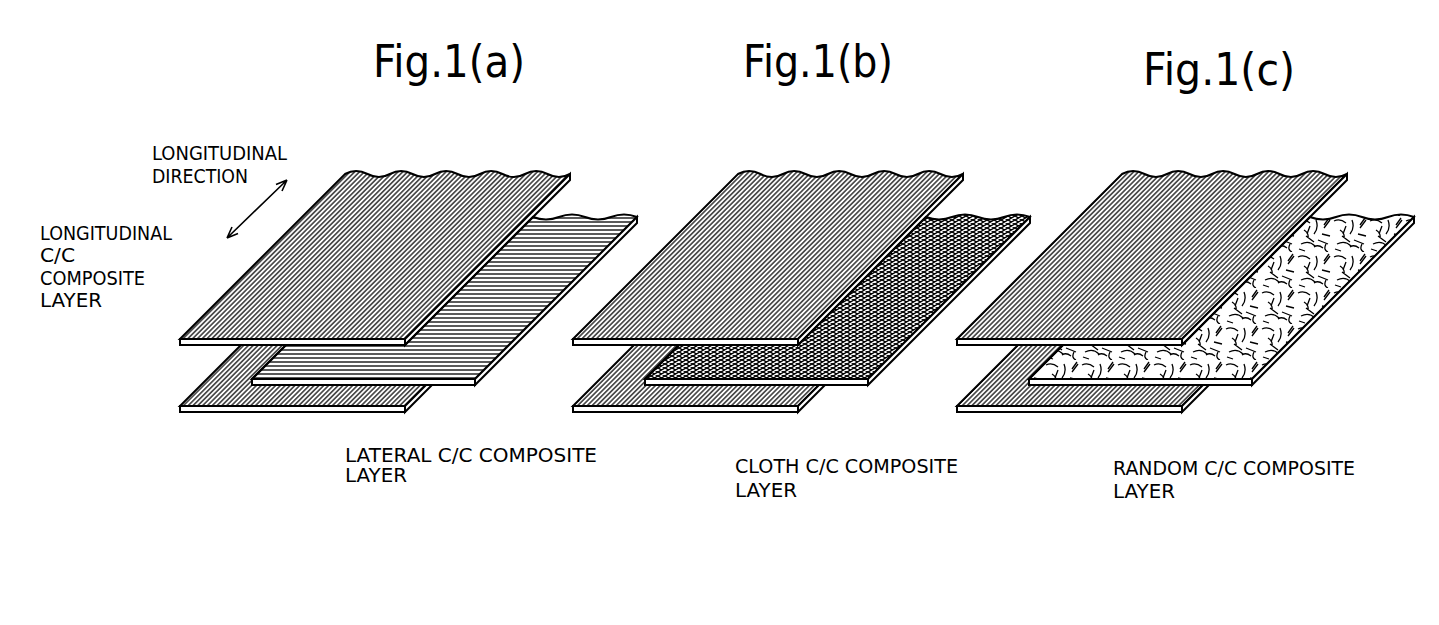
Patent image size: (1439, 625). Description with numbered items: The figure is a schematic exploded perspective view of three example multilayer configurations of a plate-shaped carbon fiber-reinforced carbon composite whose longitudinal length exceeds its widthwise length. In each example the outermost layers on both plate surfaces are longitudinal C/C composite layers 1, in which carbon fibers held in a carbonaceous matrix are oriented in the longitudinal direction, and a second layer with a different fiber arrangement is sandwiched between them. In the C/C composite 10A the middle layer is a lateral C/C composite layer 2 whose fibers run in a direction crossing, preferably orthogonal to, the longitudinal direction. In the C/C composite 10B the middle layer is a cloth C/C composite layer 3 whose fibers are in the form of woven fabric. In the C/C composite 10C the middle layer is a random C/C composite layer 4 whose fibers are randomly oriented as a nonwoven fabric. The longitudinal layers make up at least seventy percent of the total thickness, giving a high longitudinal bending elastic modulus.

In FIG. 1A, the longitudinal C/C composite layer 1 is at (216, 302).
In FIG. 1B, the longitudinal C/C composite layer 1 is at (719, 193).
In FIG. 1C, the longitudinal C/C composite layer 1 is at (1103, 193).
In FIG. 1A, the lateral C/C composite layer 2 is at (502, 360).
In FIG. 1B, the cloth C/C composite layer 3 is at (882, 372).
In FIG. 1C, the random C/C composite layer 4 is at (1264, 374).
In FIG. 1A, the C/C composite 10A is at (304, 432).
In FIG. 1B, the C/C composite 10B is at (696, 434).
In FIG. 1C, the C/C composite 10C is at (1078, 437).